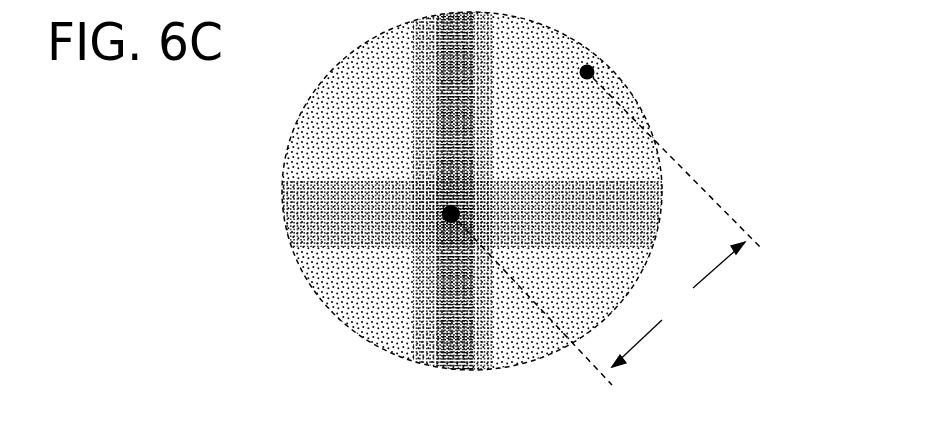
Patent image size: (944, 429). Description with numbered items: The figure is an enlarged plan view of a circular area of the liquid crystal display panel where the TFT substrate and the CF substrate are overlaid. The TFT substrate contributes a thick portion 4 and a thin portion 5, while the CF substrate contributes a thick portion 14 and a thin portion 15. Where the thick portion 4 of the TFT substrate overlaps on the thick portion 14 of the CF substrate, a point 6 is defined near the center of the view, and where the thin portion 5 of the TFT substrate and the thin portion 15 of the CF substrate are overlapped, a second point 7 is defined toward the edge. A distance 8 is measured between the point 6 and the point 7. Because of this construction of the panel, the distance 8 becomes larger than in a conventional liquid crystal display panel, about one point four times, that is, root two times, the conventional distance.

The thick portion 4 is at (357, 90).
The thin portion 5 is at (303, 217).
The point 6 is at (452, 222).
The point 7 is at (600, 70).
The distance 8 is at (678, 304).
The thick portion 14 is at (420, 345).
The thin portion 15 is at (365, 308).